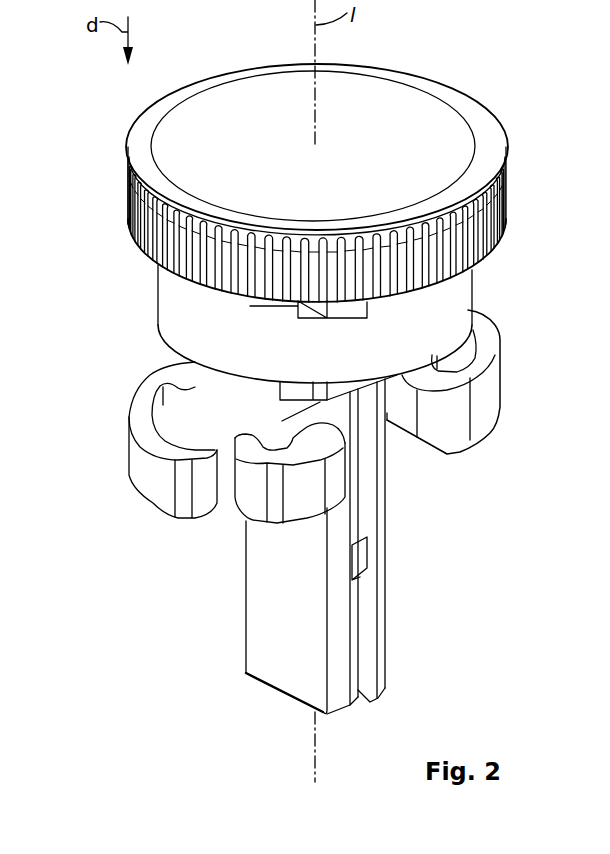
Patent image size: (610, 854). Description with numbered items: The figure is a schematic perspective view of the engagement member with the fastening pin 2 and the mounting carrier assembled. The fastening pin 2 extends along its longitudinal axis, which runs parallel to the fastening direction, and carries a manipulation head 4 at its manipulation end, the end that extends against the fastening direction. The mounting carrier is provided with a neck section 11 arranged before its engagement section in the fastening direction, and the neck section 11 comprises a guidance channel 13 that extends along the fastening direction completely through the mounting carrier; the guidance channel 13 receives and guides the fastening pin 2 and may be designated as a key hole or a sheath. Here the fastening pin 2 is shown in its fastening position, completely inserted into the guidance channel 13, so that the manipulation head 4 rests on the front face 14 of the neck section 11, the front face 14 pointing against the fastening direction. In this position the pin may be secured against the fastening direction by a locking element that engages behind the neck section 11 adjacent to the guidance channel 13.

The fastening pin 2 is at (183, 586).
The manipulation head 4 is at (404, 73).
The neck section 11 is at (521, 252).
The guidance channel 13 is at (426, 476).
The front face 14 is at (258, 307).